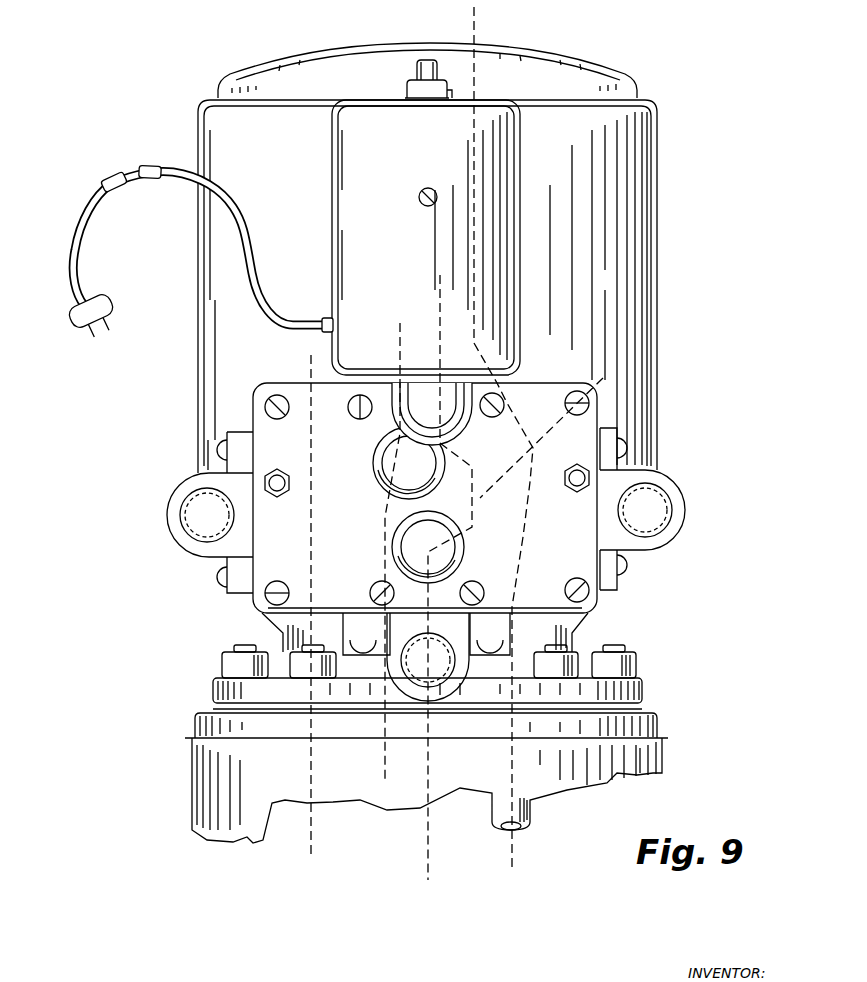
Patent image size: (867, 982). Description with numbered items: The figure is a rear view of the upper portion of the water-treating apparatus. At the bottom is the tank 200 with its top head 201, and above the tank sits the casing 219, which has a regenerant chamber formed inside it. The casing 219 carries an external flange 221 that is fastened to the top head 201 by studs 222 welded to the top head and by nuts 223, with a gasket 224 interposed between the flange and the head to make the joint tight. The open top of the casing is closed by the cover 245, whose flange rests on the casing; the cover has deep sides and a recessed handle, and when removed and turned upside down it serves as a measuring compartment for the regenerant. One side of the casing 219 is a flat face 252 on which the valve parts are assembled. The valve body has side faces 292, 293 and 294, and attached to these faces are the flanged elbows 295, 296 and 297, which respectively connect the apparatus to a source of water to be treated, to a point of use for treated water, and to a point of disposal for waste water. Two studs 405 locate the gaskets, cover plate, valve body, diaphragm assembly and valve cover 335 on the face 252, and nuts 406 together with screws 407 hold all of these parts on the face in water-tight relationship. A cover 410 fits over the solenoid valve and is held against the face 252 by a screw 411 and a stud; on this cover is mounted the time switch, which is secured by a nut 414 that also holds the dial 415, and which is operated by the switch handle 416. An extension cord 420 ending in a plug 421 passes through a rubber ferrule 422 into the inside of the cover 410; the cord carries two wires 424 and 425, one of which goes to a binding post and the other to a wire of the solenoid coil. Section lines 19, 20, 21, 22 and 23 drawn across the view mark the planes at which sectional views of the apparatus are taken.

The section line 19- 19 is at (474, 7).
The section line 20- 20 is at (311, 355).
The section line 21- 21 is at (400, 323).
The section line 22- 22 is at (440, 275).
The section line 23- 23 is at (603, 378).
The tank 200 is at (192, 792).
The top head 201 is at (658, 726).
The casing 219 is at (656, 239).
The external flange 221 is at (644, 688).
The studs 222 is at (622, 650).
The nuts 223 is at (222, 661).
The gasket 224 is at (213, 708).
The cover 245 is at (538, 48).
The flat face 252 is at (518, 384).
The face 292 is at (607, 595).
The face 293 is at (250, 432).
The face 294 is at (343, 617).
The flanged elbow 295 is at (688, 512).
The flanged elbow 296 is at (167, 522).
The flanged elbow 297 is at (461, 685).
The valve cover 335 is at (272, 608).
The studs 405 is at (283, 477).
The nuts 406 is at (269, 471).
The screws 407 is at (353, 418).
The cover 410 is at (331, 158).
The screw 411 is at (420, 200).
The nut 414 is at (421, 101).
The dial 415 is at (457, 96).
The switch handle 416 is at (417, 67).
The extension cord 420 is at (176, 178).
The plug 421 is at (110, 310).
The rubber ferrule 422 is at (330, 316).
The wire 424 is at (123, 190).
The wire 425 is at (112, 182).